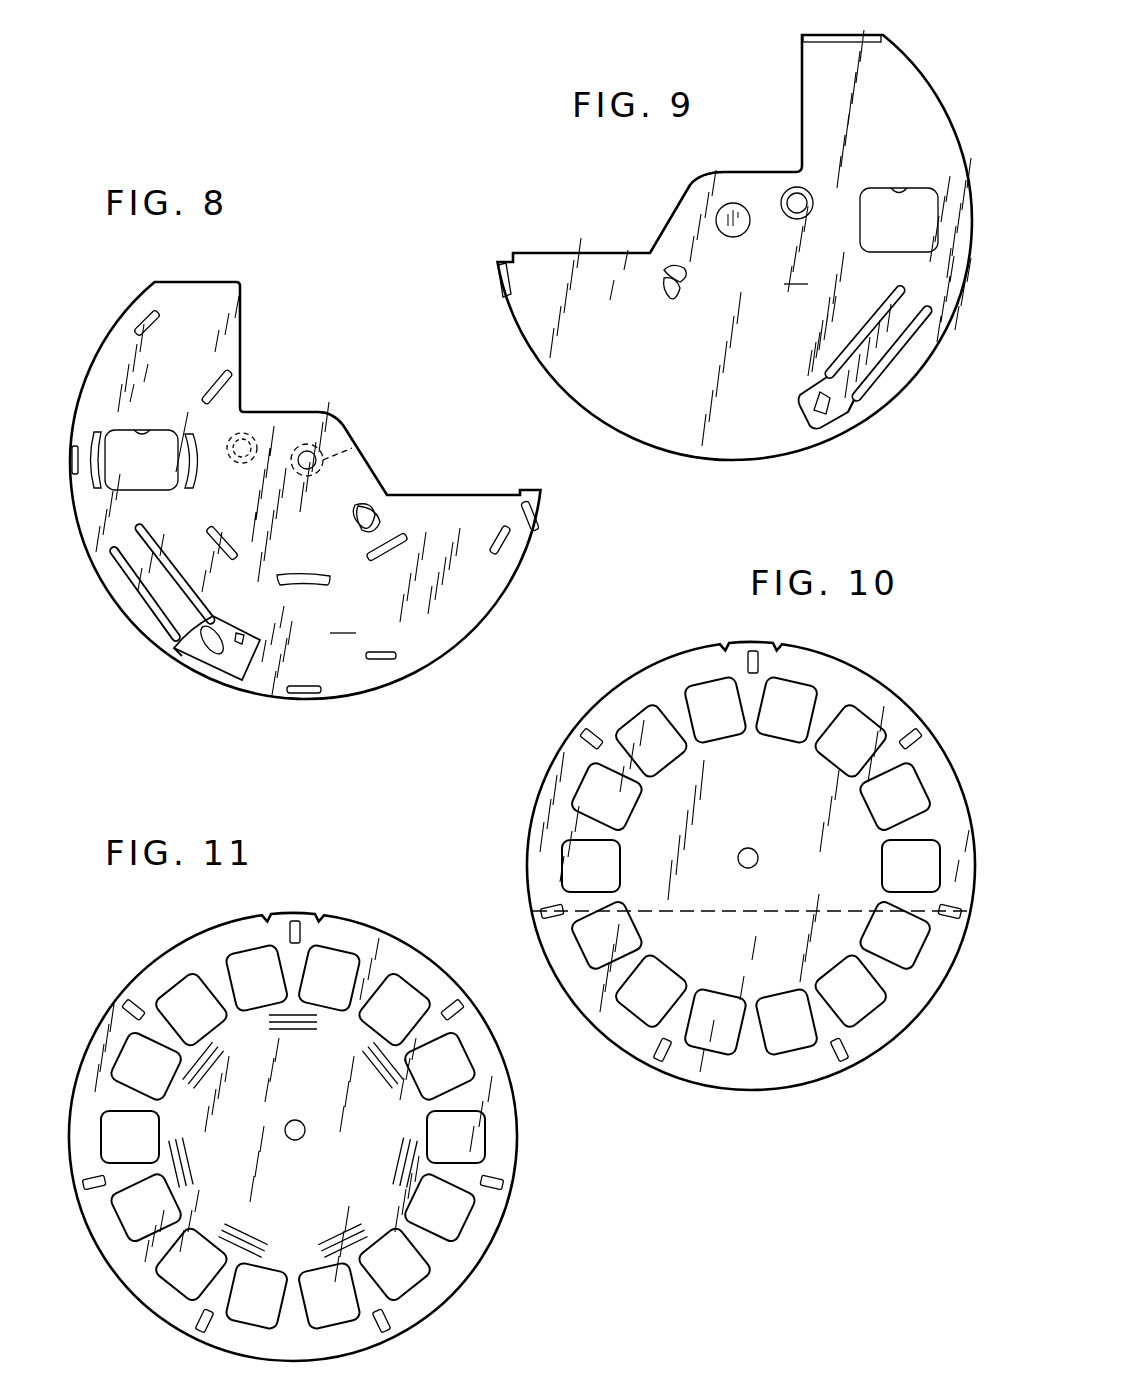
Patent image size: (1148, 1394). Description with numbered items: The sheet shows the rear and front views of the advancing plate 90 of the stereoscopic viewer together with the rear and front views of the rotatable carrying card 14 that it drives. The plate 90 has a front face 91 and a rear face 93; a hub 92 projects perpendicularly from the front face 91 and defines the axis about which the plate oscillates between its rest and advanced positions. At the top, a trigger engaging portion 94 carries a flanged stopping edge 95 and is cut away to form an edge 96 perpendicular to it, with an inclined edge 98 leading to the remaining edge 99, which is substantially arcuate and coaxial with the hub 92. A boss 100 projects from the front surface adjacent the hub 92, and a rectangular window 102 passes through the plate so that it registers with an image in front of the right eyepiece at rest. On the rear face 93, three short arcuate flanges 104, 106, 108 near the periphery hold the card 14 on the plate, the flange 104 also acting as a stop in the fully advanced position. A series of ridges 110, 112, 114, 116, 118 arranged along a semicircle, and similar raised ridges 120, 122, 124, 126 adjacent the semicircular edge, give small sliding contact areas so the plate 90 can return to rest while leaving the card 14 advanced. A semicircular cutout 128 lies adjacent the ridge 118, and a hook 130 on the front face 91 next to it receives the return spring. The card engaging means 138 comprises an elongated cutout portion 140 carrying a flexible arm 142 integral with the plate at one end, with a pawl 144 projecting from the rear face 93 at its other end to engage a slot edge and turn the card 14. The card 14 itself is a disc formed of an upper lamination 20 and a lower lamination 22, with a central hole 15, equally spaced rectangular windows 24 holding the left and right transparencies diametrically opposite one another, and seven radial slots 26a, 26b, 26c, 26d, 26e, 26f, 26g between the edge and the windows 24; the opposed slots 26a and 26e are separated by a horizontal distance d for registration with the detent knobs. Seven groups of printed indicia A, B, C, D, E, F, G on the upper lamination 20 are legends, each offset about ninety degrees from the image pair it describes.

In FIG. 8, the advancing plate 90 is at (492, 608).
In FIG. 9, the advancing plate 90 is at (925, 116).
In FIG. 9, the front face 91 is at (796, 273).
In FIG. 8, the hub 92 is at (355, 444).
In FIG. 9, the hub 92 is at (733, 203).
In FIG. 8, the rear face 93 is at (343, 622).
In FIG. 8, the trigger engaging portion 94 is at (125, 352).
In FIG. 9, the trigger engaging portion 94 is at (870, 58).
In FIG. 8, the stopping edge 95 is at (204, 282).
In FIG. 9, the stopping edge 95 is at (832, 34).
In FIG. 8, the edge 96 is at (242, 306).
In FIG. 9, the edge 96 is at (800, 76).
In FIG. 8, the inclined edge 98 is at (330, 416).
In FIG. 9, the inclined edge 98 is at (700, 172).
In FIG. 8, the edge 99 is at (262, 699).
In FIG. 9, the edge 99 is at (740, 460).
In FIG. 8, the boss 100 is at (254, 430).
In FIG. 9, the boss 100 is at (790, 188).
In FIG. 8, the rectangular window 102 is at (142, 432).
In FIG. 9, the rectangular window 102 is at (898, 188).
In FIG. 8, the arcuate flange 104 is at (526, 512).
In FIG. 8, the arcuate flange 106 is at (306, 684).
In FIG. 8, the arcuate flange 108 is at (66, 462).
In FIG. 8, the ridge 110 is at (218, 375).
In FIG. 8, the ridge 112 is at (193, 468).
In FIG. 8, the ridge 114 is at (225, 542).
In FIG. 8, the ridge 116 is at (302, 575).
In FIG. 8, the ridge 118 is at (392, 548).
In FIG. 8, the raised ridge 120 is at (148, 312).
In FIG. 8, the raised ridge 122 is at (100, 440).
In FIG. 8, the raised ridge 124 is at (382, 648).
In FIG. 8, the raised ridge 126 is at (496, 540).
In FIG. 8, the semicircular cutout 128 is at (362, 500).
In FIG. 9, the semicircular cutout 128 is at (668, 276).
In FIG. 8, the hook 130 is at (355, 520).
In FIG. 9, the hook 130 is at (682, 287).
In FIG. 8, the card engaging means 138 is at (155, 602).
In FIG. 9, the card engaging means 138 is at (878, 370).
In FIG. 8, the elongated cutout portion 140 is at (242, 634).
In FIG. 9, the elongated cutout portion 140 is at (822, 434).
In FIG. 8, the flexible arm 142 is at (172, 652).
In FIG. 9, the flexible arm 142 is at (868, 402).
In FIG. 8, the pawl 144 is at (212, 656).
In FIG. 10, the carrying card 14 is at (866, 656).
In FIG. 11, the carrying card 14 is at (355, 906).
In FIG. 10, the hole 15 is at (748, 848).
In FIG. 11, the hole 15 is at (296, 1120).
In FIG. 11, the upper lamination 20 is at (398, 946).
In FIG. 10, the lower lamination 22 is at (886, 680).
In FIG. 10, the windows 24 is at (645, 705).
In FIG. 11, the windows 24 is at (196, 980).
In FIG. 10, the radial slot 26a is at (554, 904).
In FIG. 11, the radial slot 26a is at (496, 1182).
In FIG. 10, the radial slot 26b is at (586, 734).
In FIG. 11, the radial slot 26b is at (448, 1000).
In FIG. 10, the radial slot 26c is at (753, 650).
In FIG. 11, the radial slot 26c is at (295, 922).
In FIG. 10, the radial slot 26d is at (916, 732).
In FIG. 11, the radial slot 26d is at (138, 998).
In FIG. 10, the radial slot 26e is at (955, 922).
In FIG. 11, the radial slot 26e is at (96, 1186).
In FIG. 10, the radial slot 26f is at (846, 1050).
In FIG. 11, the radial slot 26f is at (200, 1316).
In FIG. 10, the radial slot 26g is at (660, 1056).
In FIG. 11, the radial slot 26g is at (386, 1314).
In FIG. 10, the horizontal distance d is at (782, 908).
In FIG. 11, the printed indicia A is at (293, 1038).
In FIG. 11, the printed indicia B is at (216, 1075).
In FIG. 11, the printed indicia C is at (196, 1159).
In FIG. 11, the printed indicia D is at (250, 1224).
In FIG. 11, the printed indicia E is at (334, 1224).
In FIG. 11, the printed indicia F is at (389, 1158).
In FIG. 11, the printed indicia G is at (370, 1076).